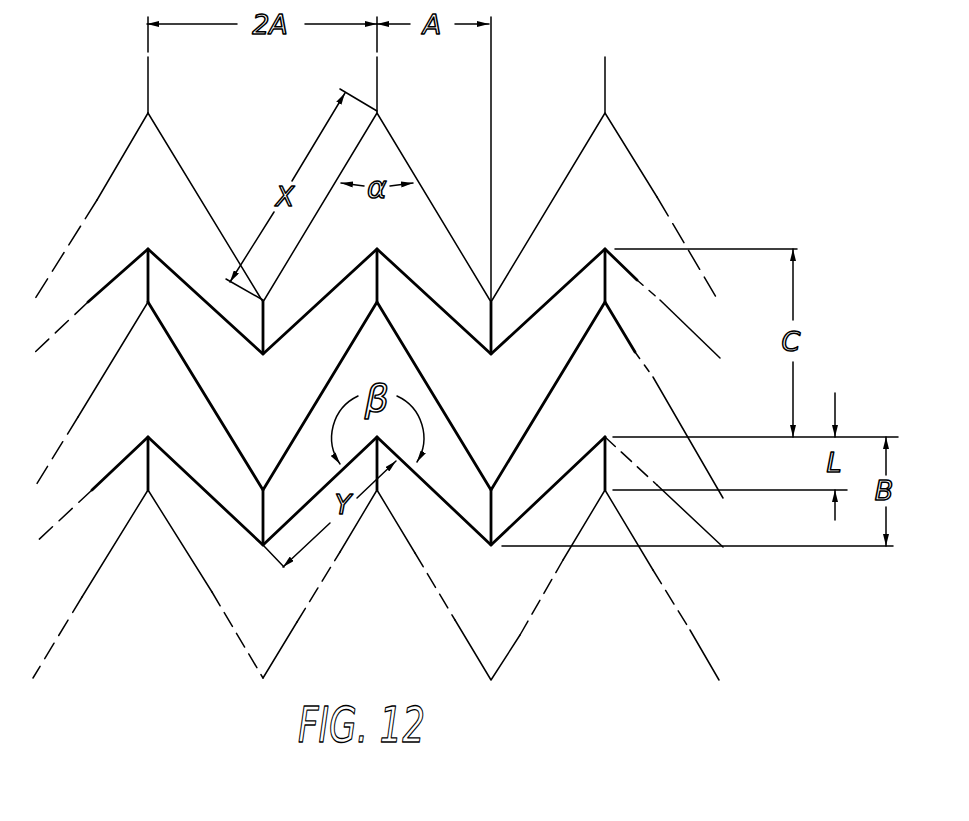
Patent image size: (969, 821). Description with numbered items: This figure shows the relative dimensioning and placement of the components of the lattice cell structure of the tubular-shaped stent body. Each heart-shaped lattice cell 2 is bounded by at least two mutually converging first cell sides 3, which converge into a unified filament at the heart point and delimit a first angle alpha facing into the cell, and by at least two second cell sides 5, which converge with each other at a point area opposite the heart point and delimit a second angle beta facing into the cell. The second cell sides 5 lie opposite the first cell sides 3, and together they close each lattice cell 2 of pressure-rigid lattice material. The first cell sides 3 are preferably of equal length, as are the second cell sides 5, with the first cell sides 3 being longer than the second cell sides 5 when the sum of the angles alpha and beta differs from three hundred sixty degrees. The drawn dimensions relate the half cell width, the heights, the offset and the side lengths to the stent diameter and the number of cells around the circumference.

The lattice cell 2 is at (367, 241).
The first cell sides 3 is at (427, 193).
The second cell sides 5 is at (407, 274).